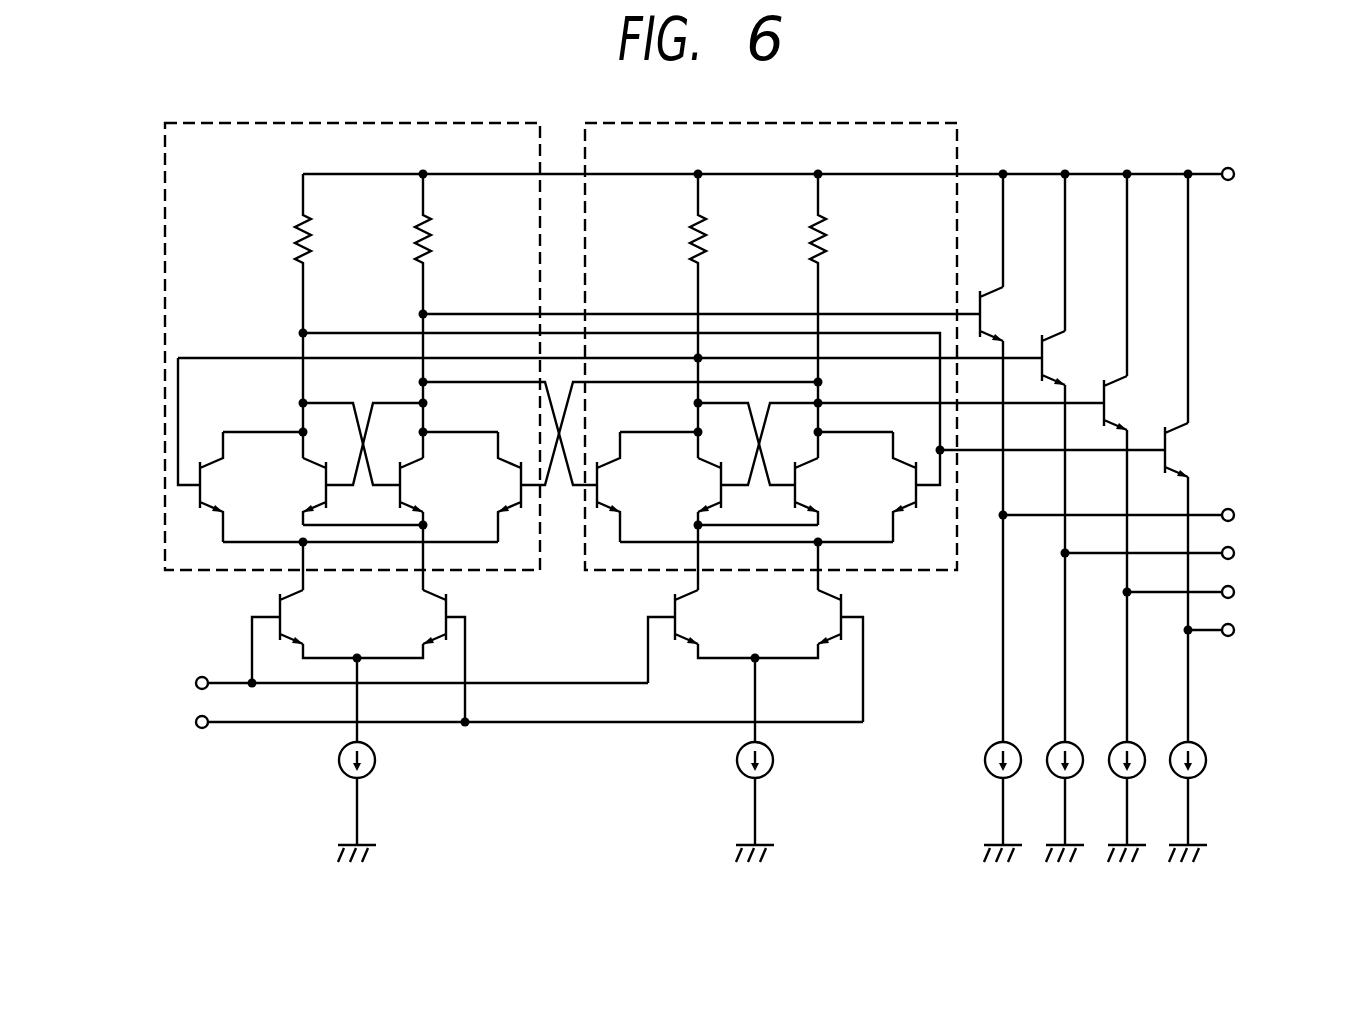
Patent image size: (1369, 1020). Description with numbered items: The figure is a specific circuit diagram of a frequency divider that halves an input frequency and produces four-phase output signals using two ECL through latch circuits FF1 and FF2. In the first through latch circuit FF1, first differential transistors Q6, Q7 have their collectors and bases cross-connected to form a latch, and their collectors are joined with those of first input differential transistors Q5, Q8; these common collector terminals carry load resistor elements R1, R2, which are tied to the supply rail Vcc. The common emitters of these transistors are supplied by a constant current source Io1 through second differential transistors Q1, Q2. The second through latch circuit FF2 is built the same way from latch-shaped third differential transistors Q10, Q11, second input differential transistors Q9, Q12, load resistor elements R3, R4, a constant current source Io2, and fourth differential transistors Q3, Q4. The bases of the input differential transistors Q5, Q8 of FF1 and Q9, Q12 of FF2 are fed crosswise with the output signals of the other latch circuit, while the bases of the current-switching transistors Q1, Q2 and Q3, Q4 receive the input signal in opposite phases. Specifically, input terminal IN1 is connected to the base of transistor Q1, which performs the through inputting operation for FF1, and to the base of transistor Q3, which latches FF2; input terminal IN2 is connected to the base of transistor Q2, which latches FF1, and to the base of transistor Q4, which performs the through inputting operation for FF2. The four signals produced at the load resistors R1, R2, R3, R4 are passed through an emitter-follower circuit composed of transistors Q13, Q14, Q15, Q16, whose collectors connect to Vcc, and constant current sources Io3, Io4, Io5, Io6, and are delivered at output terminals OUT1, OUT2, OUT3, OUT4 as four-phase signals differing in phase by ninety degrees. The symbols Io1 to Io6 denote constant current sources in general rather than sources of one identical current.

The second differential transistor Q1 is at (287, 636).
The second differential transistor Q2 is at (428, 656).
The fourth differential transistor Q3 is at (685, 636).
The fourth differential transistor Q4 is at (825, 656).
The first input differential transistor Q5 is at (215, 450).
The first differential transistor Q6 is at (300, 491).
The first differential transistor Q7 is at (423, 485).
The first input differential transistor Q8 is at (498, 487).
The second input differential transistor Q9 is at (622, 487).
The third differential transistor Q10 is at (695, 485).
The third differential transistor Q11 is at (824, 491).
The second input differential transistor Q12 is at (889, 487).
The emitter-follower transistor Q13 is at (1011, 314).
The emitter-follower transistor Q14 is at (1072, 358).
The emitter-follower transistor Q15 is at (1134, 403).
The emitter-follower transistor Q16 is at (1194, 450).
The load resistor element R1 is at (319, 316).
The load resistor element R2 is at (440, 316).
The load resistor element R3 is at (715, 316).
The load resistor element R4 is at (836, 316).
The first through latch circuit FF1 is at (352, 346).
The second through latch circuit FF2 is at (771, 346).
The constant current source Io1 is at (371, 802).
The constant current source Io2 is at (773, 802).
The constant current source Io3 is at (1017, 802).
The constant current source Io4 is at (1079, 802).
The constant current source Io5 is at (1140, 802).
The constant current source Io6 is at (1203, 802).
The input terminal IN1 is at (392, 683).
The input terminal IN2 is at (500, 725).
The output terminal OUT1 is at (1159, 517).
The output terminal OUT2 is at (1190, 555).
The output terminal OUT3 is at (1221, 593).
The output terminal OUT4 is at (1251, 631).
The power supply terminal Vcc is at (793, 173).